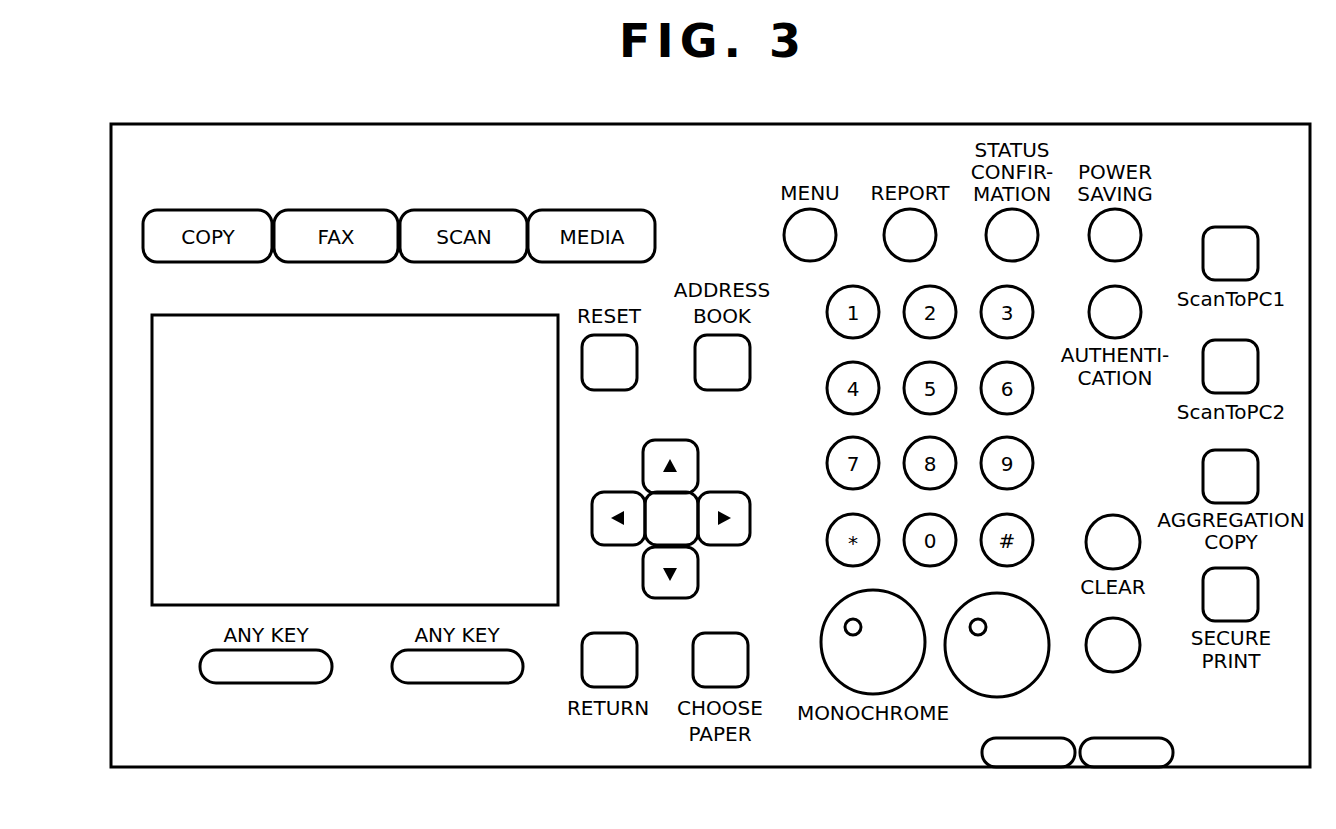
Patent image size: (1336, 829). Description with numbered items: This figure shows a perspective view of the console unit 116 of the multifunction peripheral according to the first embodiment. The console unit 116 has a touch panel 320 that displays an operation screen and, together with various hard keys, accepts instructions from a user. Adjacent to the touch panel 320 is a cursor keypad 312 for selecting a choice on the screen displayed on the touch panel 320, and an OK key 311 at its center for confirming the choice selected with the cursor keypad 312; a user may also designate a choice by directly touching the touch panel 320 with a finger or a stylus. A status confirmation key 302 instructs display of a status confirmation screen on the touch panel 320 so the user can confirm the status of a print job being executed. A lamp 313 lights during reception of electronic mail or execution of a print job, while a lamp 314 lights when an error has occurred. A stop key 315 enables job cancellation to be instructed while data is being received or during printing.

The console unit 116 is at (334, 108).
The status confirmation key 302 is at (1018, 247).
The OK key 311 is at (686, 508).
The cursor keypad 312 is at (668, 440).
The lamp 313 is at (1030, 757).
The lamp 314 is at (1127, 757).
The stop key 315 is at (1128, 643).
The touch panel 320 is at (490, 326).